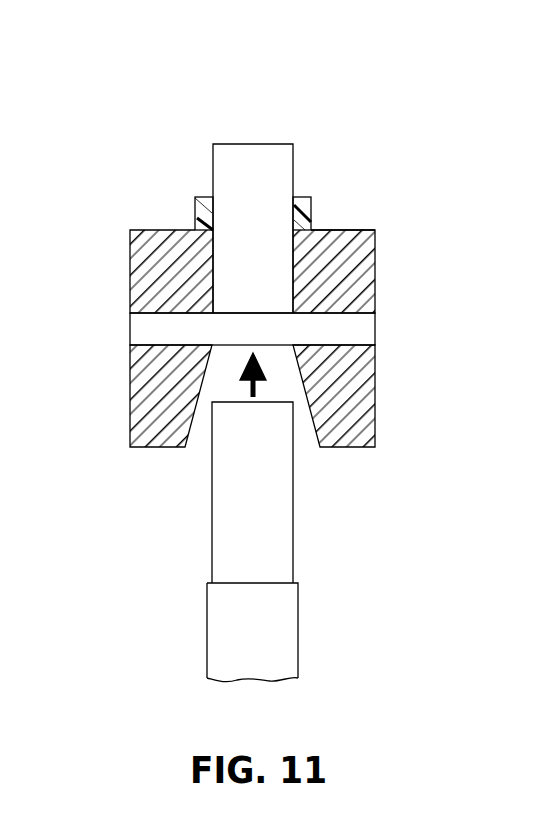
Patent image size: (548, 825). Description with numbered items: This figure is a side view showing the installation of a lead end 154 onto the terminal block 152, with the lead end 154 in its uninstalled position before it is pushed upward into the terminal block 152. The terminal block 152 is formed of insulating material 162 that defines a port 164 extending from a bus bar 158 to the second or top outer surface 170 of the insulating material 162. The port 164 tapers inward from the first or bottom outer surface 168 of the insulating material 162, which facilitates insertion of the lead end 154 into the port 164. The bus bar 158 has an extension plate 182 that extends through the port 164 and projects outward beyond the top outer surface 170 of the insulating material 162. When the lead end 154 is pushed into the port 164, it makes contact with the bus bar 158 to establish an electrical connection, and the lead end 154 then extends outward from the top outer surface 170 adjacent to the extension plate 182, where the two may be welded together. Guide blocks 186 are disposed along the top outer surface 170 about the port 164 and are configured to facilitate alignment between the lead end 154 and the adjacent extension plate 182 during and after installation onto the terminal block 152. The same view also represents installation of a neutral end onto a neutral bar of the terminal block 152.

The terminal block 152 is at (333, 102).
The lead end 154 is at (293, 493).
The bus bar 158 is at (375, 328).
The insulating material 162 is at (163, 268).
The port 164 is at (290, 273).
The first or bottom outer surface 168 is at (158, 448).
The second or top outer surface 170 is at (353, 230).
The extension plate 182 is at (212, 152).
The guide block 186 is at (195, 212).